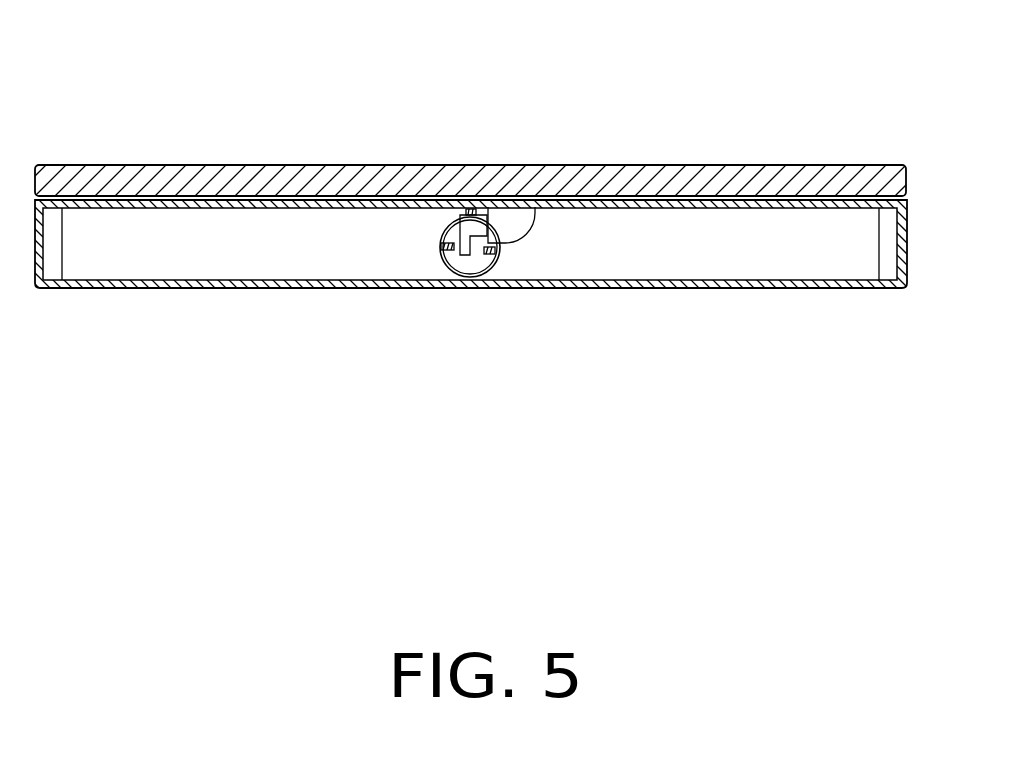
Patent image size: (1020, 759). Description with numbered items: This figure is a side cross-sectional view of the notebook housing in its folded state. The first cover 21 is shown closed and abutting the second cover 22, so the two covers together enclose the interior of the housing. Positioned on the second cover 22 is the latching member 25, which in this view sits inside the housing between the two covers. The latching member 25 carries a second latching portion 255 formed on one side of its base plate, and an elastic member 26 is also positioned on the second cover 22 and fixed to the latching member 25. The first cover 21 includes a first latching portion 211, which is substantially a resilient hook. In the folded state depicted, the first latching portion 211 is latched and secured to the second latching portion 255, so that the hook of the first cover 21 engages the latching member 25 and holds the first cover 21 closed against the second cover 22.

The first cover 21 is at (595, 177).
The first latching portion 211 is at (505, 227).
The second cover 22 is at (643, 286).
The latching member 25 is at (465, 268).
The second latching portion 255 is at (463, 222).
The elastic member 26 is at (477, 208).